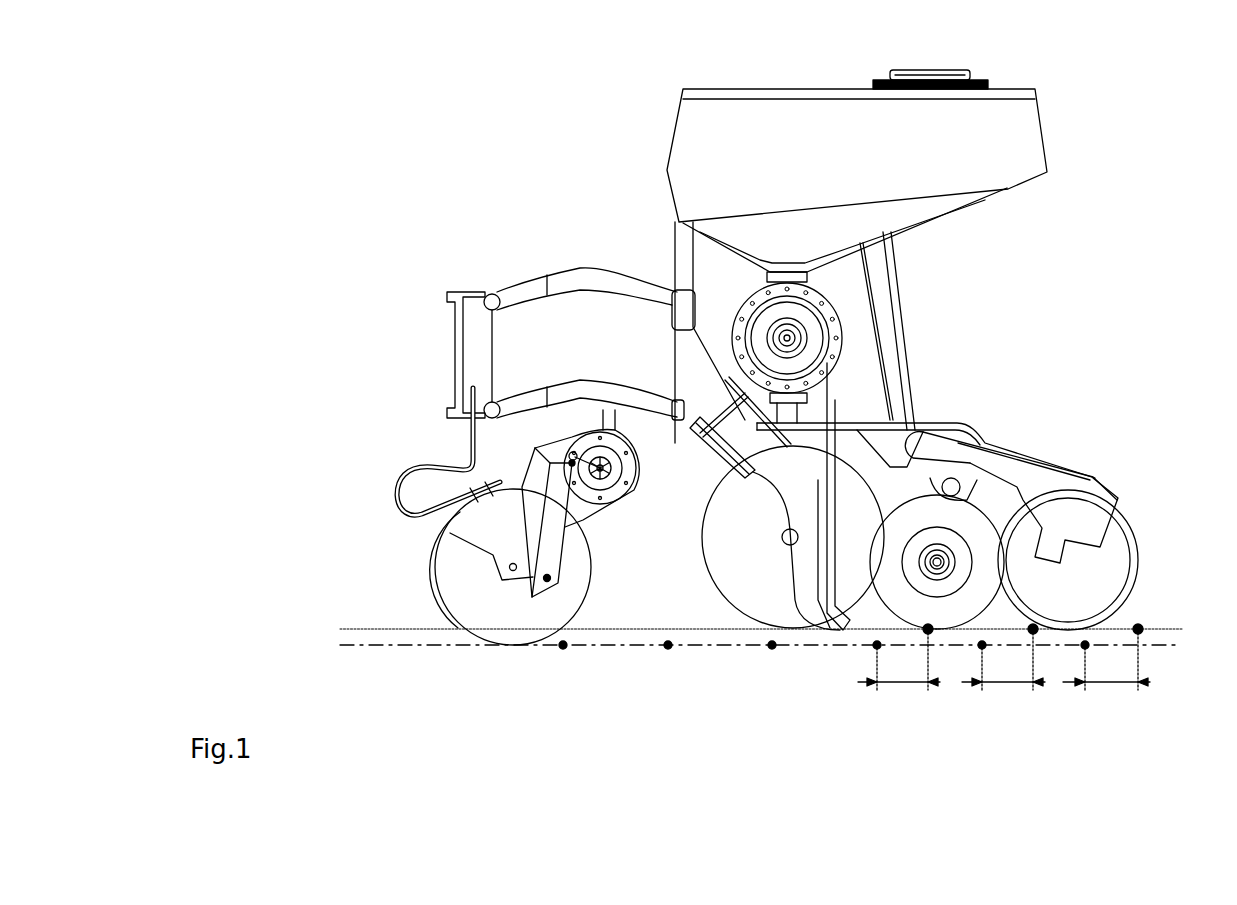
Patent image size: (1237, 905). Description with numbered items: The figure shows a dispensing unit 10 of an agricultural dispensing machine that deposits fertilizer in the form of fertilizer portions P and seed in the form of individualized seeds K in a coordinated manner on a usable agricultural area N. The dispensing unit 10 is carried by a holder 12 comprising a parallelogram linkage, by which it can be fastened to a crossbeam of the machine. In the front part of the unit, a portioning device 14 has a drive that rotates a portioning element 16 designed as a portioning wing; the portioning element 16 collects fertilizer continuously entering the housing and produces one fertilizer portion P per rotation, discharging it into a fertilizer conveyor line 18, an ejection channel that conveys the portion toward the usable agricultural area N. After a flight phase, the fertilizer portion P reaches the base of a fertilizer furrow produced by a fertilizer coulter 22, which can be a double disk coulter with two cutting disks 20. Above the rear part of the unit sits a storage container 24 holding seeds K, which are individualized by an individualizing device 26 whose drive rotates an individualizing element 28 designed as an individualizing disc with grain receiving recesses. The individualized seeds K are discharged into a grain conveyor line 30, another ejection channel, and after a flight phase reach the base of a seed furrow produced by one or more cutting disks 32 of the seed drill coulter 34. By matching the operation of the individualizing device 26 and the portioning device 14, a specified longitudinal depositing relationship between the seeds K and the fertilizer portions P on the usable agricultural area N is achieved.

The dispensing unit 10 is at (503, 148).
The holder 12 is at (523, 293).
The portioning device 14 is at (648, 463).
The portioning element 16 is at (594, 462).
The fertilizer conveyor line 18 is at (555, 535).
The cutting disks 20 is at (458, 575).
The fertilizer coulter 22 is at (435, 498).
The storage container 24 is at (788, 140).
The individualizing device 26 is at (838, 298).
The individualizing element 28 is at (833, 315).
The grain conveyor line 30 is at (832, 402).
The cutting disks 32 is at (722, 560).
The seed drill coulter 34 is at (887, 493).
The usable agricultural area N is at (388, 637).
The fertilizer portions P is at (563, 649).
The individualized seeds K is at (930, 632).